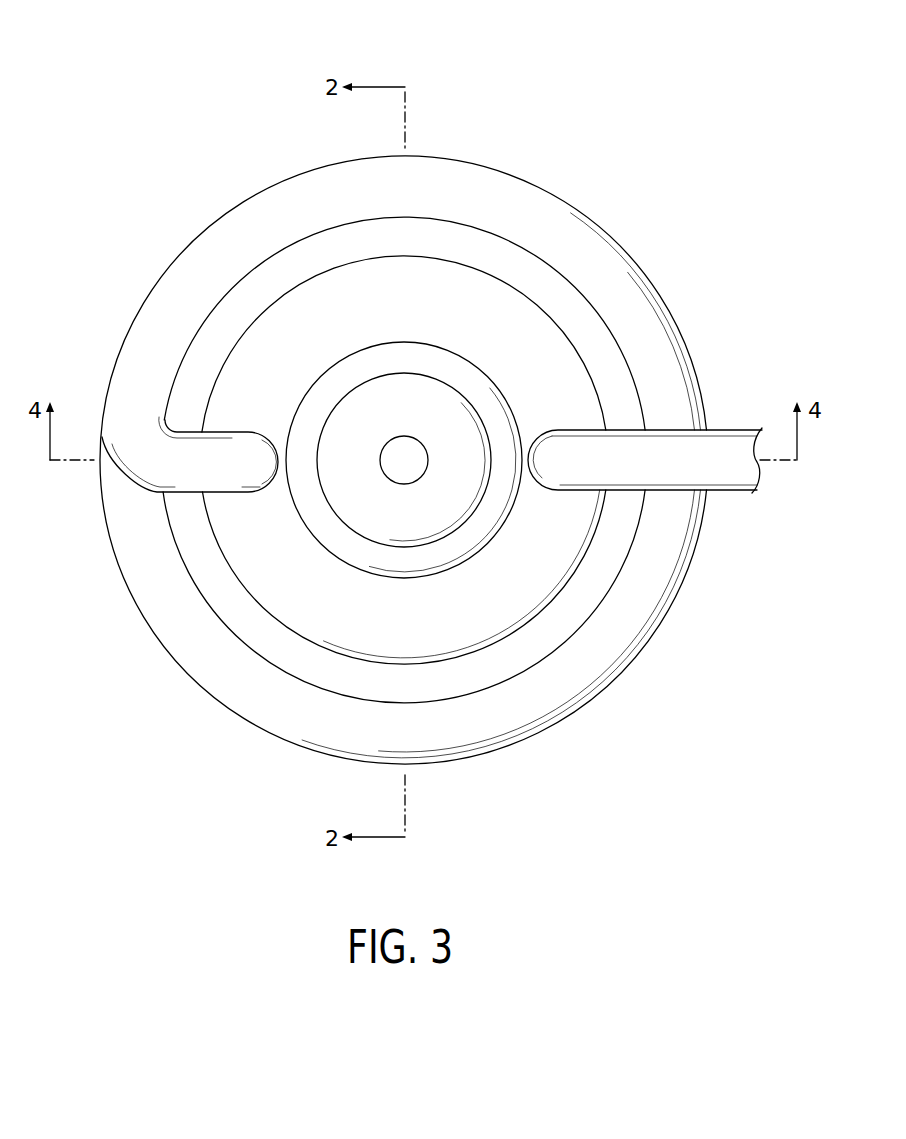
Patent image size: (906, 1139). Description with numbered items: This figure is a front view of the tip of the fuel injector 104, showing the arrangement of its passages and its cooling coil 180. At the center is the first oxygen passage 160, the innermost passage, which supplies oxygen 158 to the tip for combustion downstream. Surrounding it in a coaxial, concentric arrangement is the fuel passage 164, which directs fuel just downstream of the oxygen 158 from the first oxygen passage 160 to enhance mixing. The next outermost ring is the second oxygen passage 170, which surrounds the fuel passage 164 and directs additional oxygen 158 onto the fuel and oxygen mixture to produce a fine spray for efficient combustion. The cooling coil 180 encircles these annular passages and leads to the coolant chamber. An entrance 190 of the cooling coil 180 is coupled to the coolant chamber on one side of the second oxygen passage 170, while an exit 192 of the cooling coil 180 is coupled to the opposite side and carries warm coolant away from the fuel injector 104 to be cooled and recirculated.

The fuel injector 104 is at (622, 106).
The oxygen 158 is at (380, 473).
The first oxygen passage 160 is at (363, 500).
The fuel passage 164 is at (463, 545).
The second oxygen passage 170 is at (558, 530).
The cooling coil 180 is at (598, 268).
The entrance 190 is at (230, 492).
The exit 192 is at (565, 430).